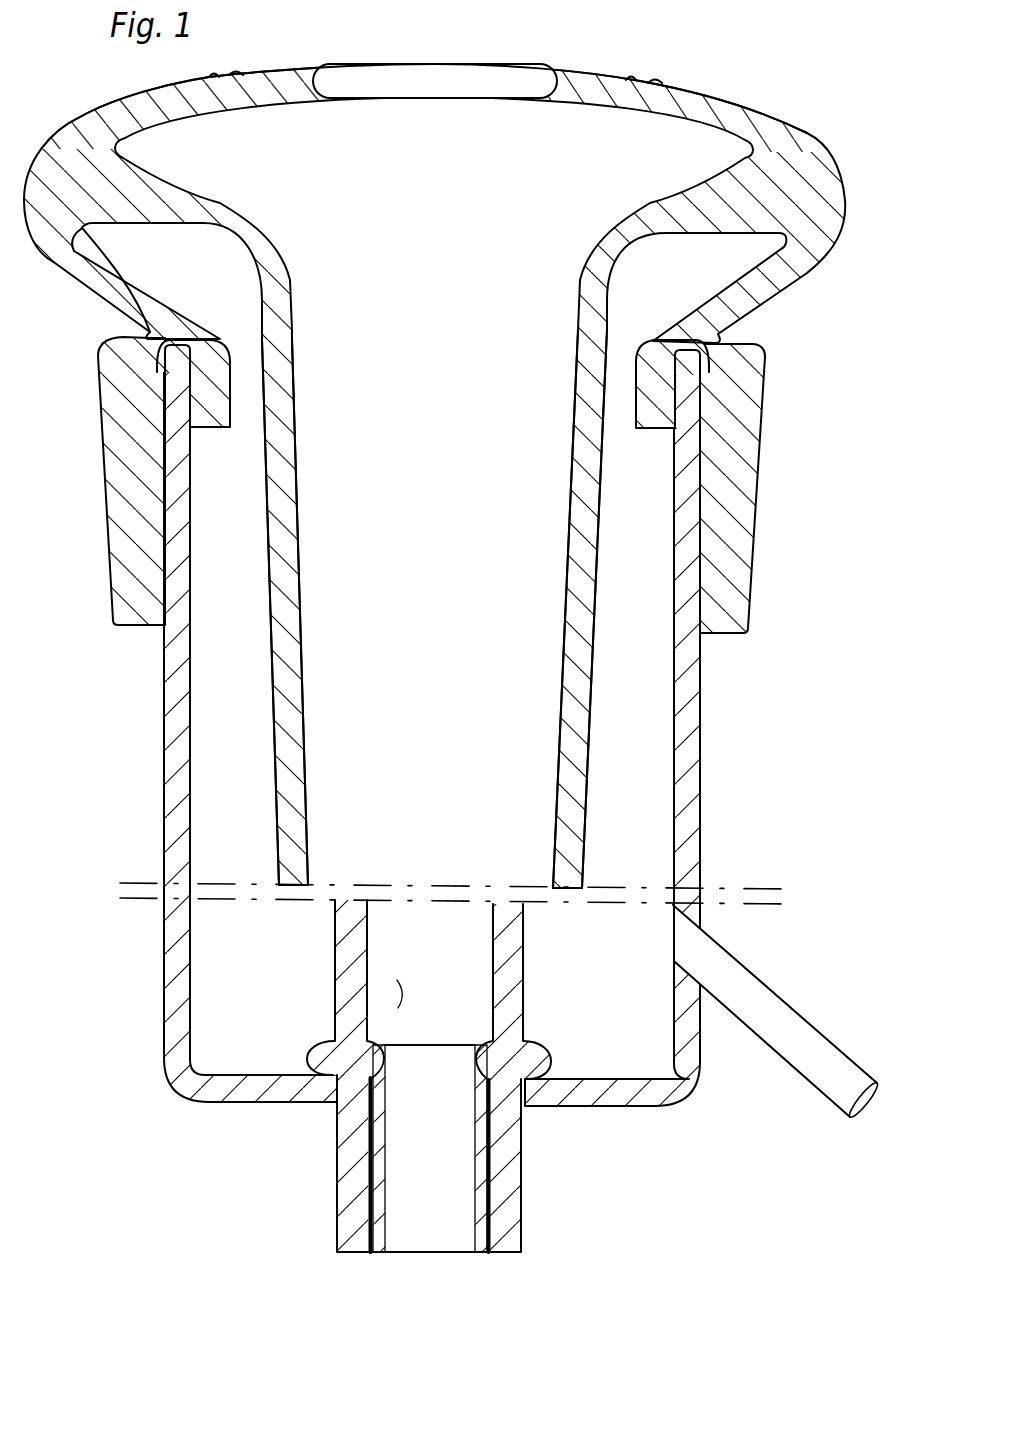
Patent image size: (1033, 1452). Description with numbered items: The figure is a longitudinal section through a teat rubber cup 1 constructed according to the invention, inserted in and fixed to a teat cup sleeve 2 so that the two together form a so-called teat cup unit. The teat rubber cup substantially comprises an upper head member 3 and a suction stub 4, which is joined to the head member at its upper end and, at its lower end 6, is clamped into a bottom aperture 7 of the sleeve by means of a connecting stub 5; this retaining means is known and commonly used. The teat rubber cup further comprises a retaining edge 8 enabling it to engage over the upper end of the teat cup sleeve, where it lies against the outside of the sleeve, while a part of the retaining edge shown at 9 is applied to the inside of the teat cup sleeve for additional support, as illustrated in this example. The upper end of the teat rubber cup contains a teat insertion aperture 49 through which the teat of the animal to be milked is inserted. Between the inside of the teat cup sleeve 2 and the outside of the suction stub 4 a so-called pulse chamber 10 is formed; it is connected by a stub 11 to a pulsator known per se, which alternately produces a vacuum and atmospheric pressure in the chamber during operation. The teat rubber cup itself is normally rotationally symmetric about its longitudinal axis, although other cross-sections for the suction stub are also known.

The teat rubber cup 1 is at (457, 462).
The teat cup sleeve 2 is at (741, 769).
The head member 3 is at (710, 75).
The suction stub 4 is at (577, 715).
The connecting stub 5 is at (480, 1187).
The lower end 6 is at (513, 970).
The bottom aperture 7 is at (370, 1140).
The retaining edge 8 is at (738, 527).
The part of the retaining edge 9 is at (665, 405).
The pulse chamber 10 is at (630, 838).
The stub 11 is at (760, 1005).
The teat insertion aperture 49 is at (495, 86).